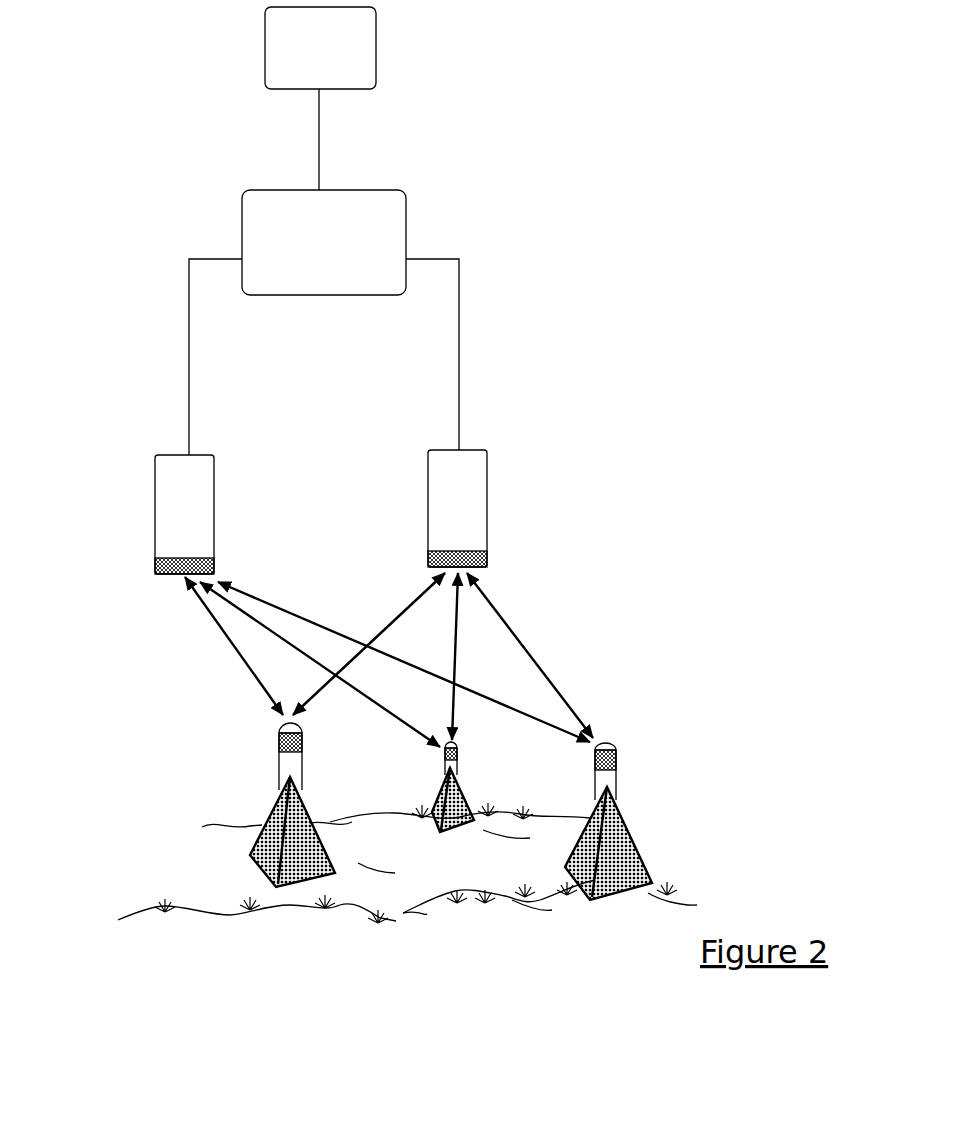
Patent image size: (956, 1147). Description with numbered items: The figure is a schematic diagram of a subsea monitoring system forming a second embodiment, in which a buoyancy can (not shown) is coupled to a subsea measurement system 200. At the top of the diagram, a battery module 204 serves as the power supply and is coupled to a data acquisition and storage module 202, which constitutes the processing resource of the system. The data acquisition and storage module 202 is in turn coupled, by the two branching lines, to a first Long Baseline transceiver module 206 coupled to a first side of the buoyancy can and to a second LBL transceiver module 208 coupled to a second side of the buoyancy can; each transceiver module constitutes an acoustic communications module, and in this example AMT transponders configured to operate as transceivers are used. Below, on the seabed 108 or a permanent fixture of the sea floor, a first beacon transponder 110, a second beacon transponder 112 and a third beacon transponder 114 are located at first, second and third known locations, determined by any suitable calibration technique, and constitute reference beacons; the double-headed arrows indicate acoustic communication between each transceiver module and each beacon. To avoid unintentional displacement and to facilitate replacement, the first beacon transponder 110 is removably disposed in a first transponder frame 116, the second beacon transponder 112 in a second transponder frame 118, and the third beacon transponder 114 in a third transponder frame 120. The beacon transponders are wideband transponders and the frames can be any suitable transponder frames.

The subsea measurement system 200 is at (604, 421).
The data acquisition and storage module 202 is at (324, 242).
The battery module 204 is at (320, 48).
The first Long Baseline (LBL) transceiver module 206 is at (184, 514).
The second LBL transceiver module 208 is at (457, 508).
The seabed 108 is at (137, 918).
The first beacon transponder 110 is at (290, 767).
The second beacon transponder 112 is at (455, 763).
The third beacon transponder 114 is at (608, 780).
The first transponder frame 116 is at (267, 860).
The second transponder frame 118 is at (433, 810).
The third transponder frame 120 is at (620, 867).